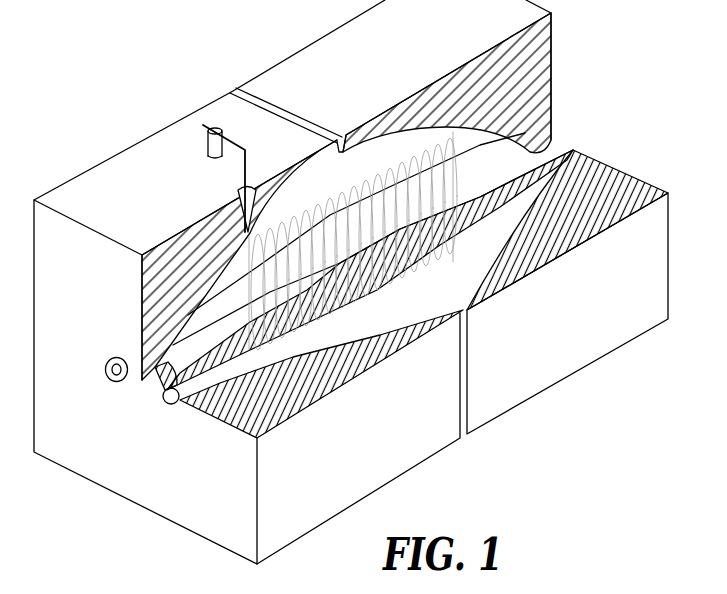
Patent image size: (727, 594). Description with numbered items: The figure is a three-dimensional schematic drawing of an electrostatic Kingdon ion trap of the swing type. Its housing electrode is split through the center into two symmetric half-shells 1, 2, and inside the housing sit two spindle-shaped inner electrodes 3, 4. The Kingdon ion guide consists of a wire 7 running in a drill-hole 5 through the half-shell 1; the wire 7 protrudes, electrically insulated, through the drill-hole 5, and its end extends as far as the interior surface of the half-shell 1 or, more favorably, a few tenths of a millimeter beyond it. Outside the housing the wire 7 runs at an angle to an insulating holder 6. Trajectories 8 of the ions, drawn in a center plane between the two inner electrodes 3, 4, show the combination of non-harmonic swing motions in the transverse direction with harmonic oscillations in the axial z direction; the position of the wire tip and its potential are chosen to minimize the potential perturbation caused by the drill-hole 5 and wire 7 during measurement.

The half-shell 1 is at (292, 282).
The half-shell 2 is at (667, 313).
The inner electrode 3 is at (373, 239).
The inner electrode 4 is at (320, 357).
The drill-hole 5 is at (238, 204).
The insulating holder 6 is at (206, 143).
The wire 7 is at (234, 178).
The ion trajectories 8 is at (358, 241).